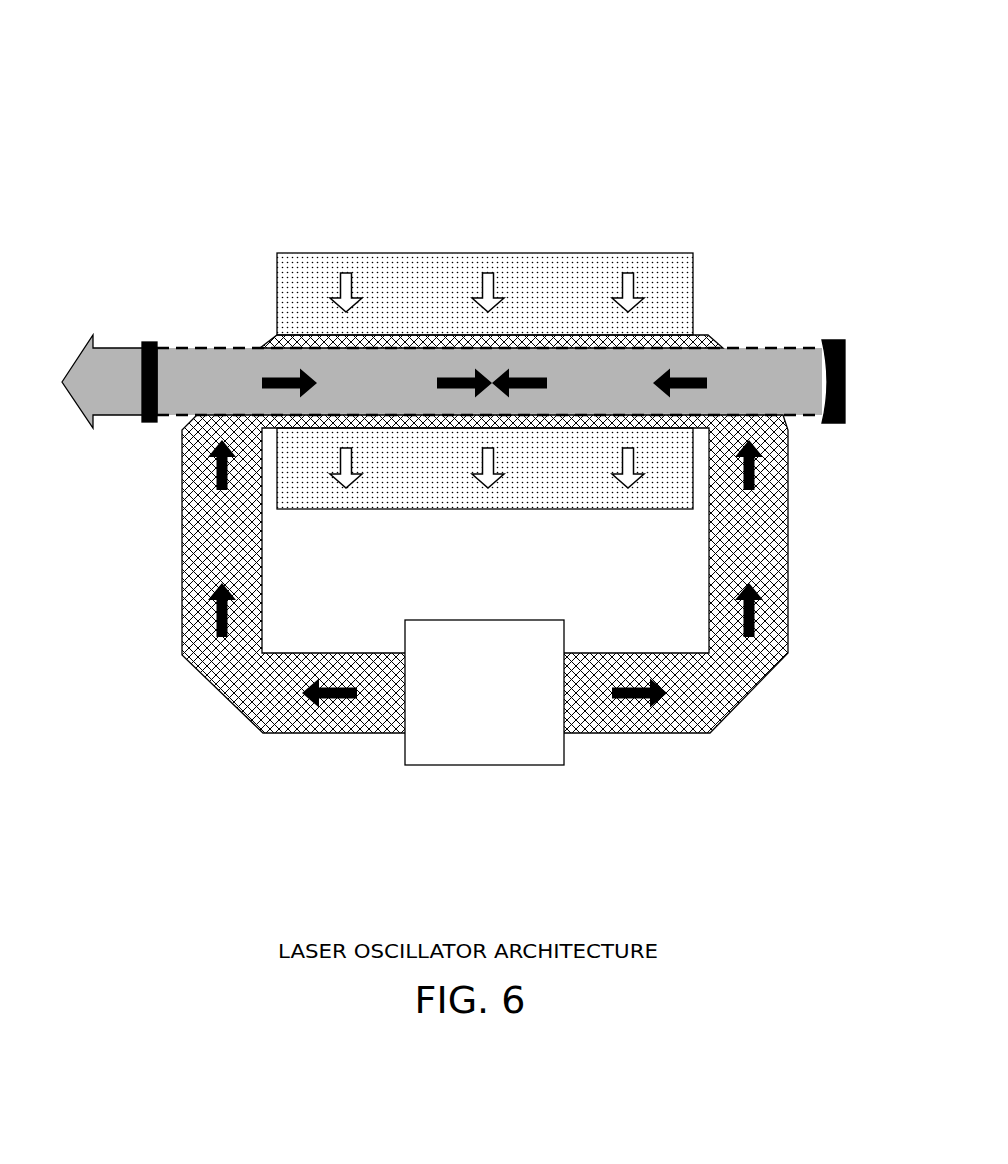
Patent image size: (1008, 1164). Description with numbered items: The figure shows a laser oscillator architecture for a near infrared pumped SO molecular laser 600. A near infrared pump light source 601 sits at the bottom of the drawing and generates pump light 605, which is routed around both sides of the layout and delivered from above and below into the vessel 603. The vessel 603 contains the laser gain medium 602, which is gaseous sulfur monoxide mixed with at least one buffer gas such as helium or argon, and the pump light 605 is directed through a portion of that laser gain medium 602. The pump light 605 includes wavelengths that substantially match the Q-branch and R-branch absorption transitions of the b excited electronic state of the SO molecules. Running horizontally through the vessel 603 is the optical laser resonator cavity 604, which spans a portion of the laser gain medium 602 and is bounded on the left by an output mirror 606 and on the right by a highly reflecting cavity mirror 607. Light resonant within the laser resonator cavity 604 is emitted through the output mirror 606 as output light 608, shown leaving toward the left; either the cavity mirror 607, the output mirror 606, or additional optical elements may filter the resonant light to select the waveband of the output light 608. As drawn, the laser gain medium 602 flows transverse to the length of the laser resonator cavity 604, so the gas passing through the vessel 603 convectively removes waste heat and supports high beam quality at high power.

The near infrared pumped SO molecular laser 600 is at (192, 53).
The near infrared pump light source 601 is at (484, 692).
The laser gain medium 602 is at (660, 287).
The vessel 603 is at (578, 253).
The laser resonator cavity 604 is at (197, 368).
The pump light 605 is at (258, 700).
The output mirror 606 is at (150, 422).
The cavity mirror 607 is at (834, 424).
The output light 608 is at (108, 346).